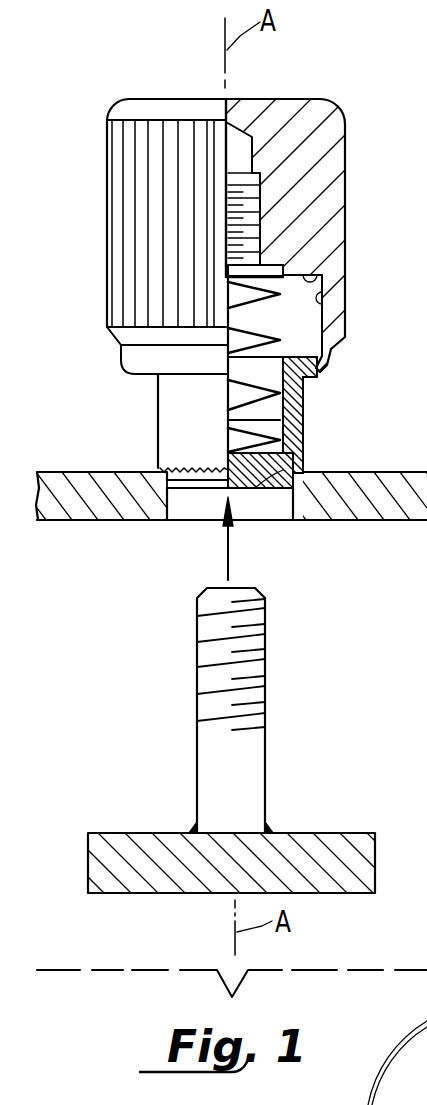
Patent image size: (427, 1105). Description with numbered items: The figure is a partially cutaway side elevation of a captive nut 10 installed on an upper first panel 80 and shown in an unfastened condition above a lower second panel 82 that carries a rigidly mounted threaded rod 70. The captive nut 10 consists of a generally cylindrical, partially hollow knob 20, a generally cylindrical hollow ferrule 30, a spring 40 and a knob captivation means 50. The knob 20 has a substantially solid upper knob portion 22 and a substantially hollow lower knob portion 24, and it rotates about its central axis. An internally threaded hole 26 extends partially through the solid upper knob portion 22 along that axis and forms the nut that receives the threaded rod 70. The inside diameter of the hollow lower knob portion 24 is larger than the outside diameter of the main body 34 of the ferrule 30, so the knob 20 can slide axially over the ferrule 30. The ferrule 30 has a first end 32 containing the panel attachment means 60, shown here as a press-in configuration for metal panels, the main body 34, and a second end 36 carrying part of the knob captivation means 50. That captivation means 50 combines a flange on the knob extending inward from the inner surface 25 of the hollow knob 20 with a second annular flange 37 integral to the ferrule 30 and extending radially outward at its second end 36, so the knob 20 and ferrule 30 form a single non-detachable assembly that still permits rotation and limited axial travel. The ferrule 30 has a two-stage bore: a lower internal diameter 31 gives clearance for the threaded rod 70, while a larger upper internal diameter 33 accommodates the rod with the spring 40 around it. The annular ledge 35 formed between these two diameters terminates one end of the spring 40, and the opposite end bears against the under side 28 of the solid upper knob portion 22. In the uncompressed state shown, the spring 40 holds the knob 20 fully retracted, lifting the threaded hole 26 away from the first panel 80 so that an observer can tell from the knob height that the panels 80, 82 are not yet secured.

The captive nut 10 is at (118, 88).
The knob 20 is at (320, 100).
The solid upper knob portion 22 is at (337, 110).
The hollow lower knob portion 24 is at (335, 322).
The inner surface 25 is at (318, 283).
The internally threaded hole 26 is at (257, 187).
The under side 28 is at (323, 272).
The ferrule 30 is at (303, 430).
The lower internal diameter 31 is at (250, 492).
The first end 32 is at (275, 496).
The upper internal diameter 33 is at (226, 431).
The main body 34 is at (303, 443).
The annular ledge 35 is at (305, 478).
The second end 36 is at (337, 341).
The second annular flange 37 is at (307, 378).
The spring 40 is at (318, 300).
The knob captivation means 50 is at (327, 363).
The panel attachment means 60 is at (287, 480).
The threaded rod 70 is at (268, 762).
The first panel 80 is at (93, 466).
The second panel 82 is at (137, 833).